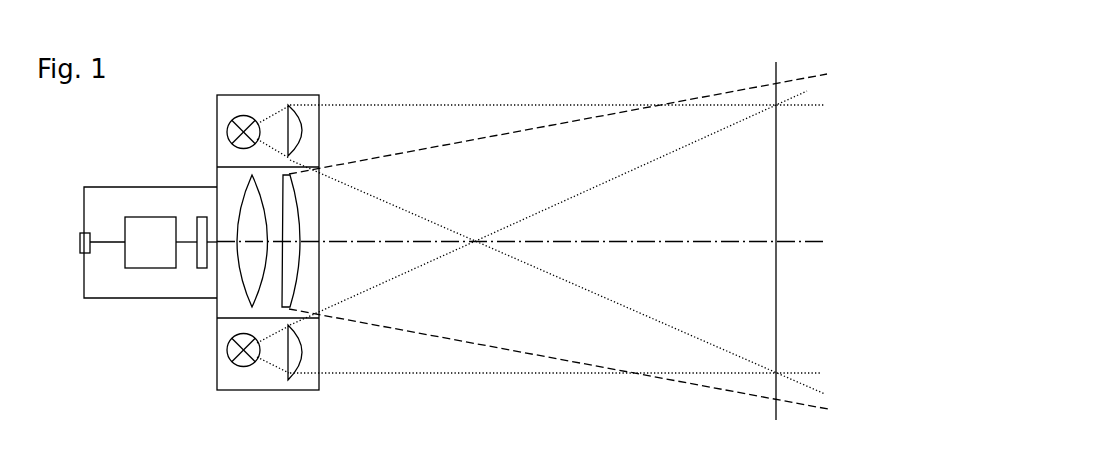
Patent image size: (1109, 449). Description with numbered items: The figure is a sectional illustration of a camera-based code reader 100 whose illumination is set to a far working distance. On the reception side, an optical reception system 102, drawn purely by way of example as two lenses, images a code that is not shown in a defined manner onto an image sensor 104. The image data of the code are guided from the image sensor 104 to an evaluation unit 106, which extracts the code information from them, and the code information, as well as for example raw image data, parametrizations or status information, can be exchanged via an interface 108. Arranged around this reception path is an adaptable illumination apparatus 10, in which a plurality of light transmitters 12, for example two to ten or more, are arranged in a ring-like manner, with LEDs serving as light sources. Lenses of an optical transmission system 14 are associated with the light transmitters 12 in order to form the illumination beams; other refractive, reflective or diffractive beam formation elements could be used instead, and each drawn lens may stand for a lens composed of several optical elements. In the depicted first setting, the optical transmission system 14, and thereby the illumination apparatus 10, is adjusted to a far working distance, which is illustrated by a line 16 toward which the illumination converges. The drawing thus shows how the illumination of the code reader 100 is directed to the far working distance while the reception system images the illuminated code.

The camera-based code reader 100 is at (450, 63).
The illumination apparatus 10 is at (320, 125).
The light transmitter 12 is at (238, 125).
The optical transmission system 14 is at (290, 105).
The line 16 is at (776, 83).
The optical reception system 102 is at (320, 197).
The image sensor 104 is at (200, 267).
The evaluation unit 106 is at (153, 228).
The interface 108 is at (89, 234).